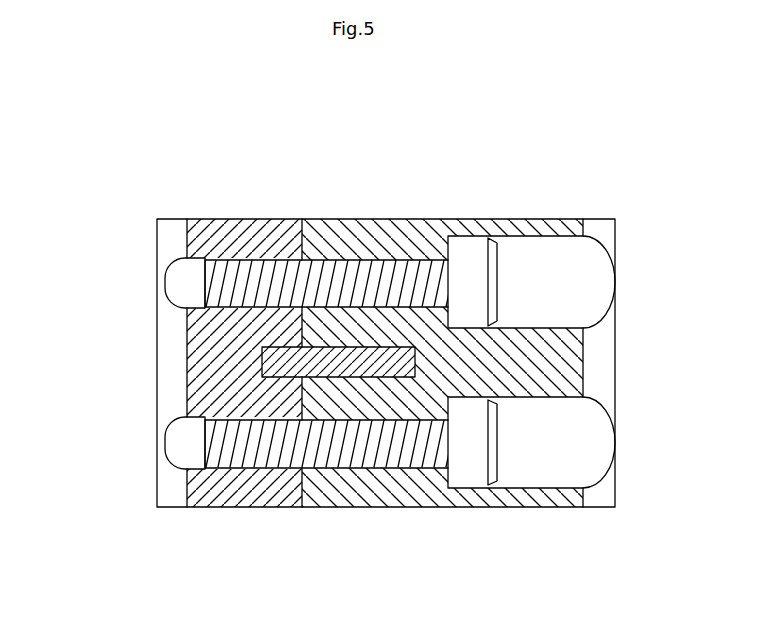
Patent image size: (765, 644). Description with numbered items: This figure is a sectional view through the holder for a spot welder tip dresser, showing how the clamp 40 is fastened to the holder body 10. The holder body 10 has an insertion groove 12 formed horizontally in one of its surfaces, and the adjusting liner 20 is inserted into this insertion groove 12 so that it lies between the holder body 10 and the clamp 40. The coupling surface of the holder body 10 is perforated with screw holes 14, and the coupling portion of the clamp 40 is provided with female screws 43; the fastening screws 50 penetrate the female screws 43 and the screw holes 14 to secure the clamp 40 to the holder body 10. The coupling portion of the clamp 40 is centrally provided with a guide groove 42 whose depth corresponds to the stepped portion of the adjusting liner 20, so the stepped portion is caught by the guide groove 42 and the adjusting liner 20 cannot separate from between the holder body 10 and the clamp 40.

The holder body 10 is at (559, 214).
The insertion groove 12 is at (350, 377).
The screw holes 14 is at (385, 466).
The adjusting liner 20 is at (392, 360).
The clamp 40 is at (164, 214).
The guide groove 42 is at (283, 355).
The female screws 43 is at (262, 458).
The fastening screws 50 is at (493, 442).